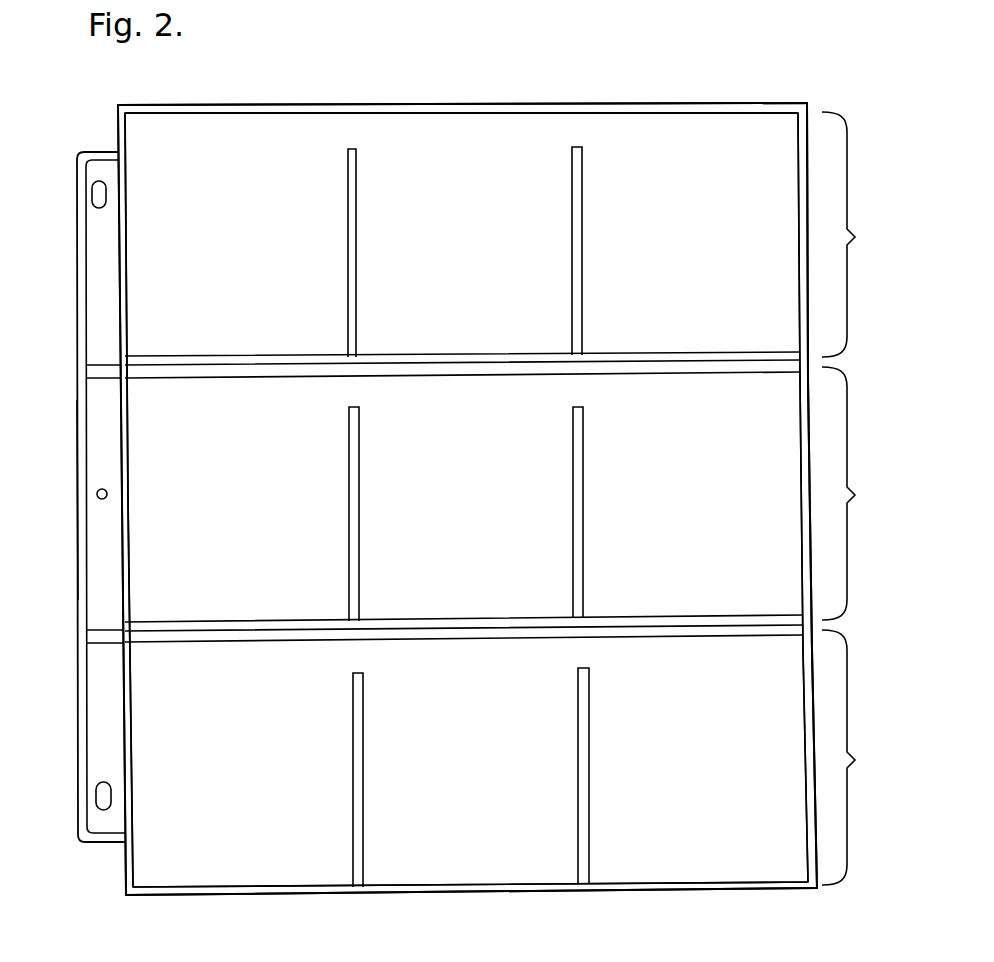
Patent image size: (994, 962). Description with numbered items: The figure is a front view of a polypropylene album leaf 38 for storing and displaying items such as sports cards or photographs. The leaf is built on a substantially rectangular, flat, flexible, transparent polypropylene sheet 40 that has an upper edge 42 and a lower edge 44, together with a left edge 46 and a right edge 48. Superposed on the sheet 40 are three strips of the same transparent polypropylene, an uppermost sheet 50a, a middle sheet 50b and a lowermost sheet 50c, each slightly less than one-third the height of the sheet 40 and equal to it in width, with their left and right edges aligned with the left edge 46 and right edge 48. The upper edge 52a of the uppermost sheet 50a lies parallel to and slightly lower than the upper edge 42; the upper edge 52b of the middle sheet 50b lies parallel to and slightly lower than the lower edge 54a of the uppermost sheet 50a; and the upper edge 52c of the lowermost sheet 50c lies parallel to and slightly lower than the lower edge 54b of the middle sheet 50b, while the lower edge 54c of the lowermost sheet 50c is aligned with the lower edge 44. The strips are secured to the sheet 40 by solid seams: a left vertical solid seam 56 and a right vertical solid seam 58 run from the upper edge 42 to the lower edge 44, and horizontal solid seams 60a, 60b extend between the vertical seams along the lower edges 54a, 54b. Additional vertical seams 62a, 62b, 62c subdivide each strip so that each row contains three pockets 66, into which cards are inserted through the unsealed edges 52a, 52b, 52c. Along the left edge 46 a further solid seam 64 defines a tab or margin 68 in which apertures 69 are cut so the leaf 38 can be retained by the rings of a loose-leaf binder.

The album leaf 38 is at (443, 102).
The polypropylene sheet 40 is at (634, 105).
The upper edge 42 is at (700, 105).
The lower edge 44 is at (648, 893).
The left edge 46 is at (76, 272).
The right edge 48 is at (813, 103).
The uppermost sheet 50a is at (859, 234).
The middle sheet 50b is at (859, 493).
The lowermost sheet 50c is at (858, 757).
The upper edge of uppermost sheet 52a is at (247, 119).
The upper edge of middle sheet 52b is at (207, 380).
The upper edge of lowermost sheet 52c is at (195, 645).
The lower edge of uppermost sheet 54a is at (100, 370).
The lower edge of middle sheet 54b is at (100, 640).
The lower edge of lowermost sheet 54c is at (232, 895).
The left vertical solid seam 56 is at (124, 250).
The right vertical solid seam 58 is at (797, 240).
The horizontal solid seam 60a is at (262, 356).
The horizontal solid seam 60b is at (245, 622).
The vertical seams of first row 62a is at (357, 175).
The vertical seams of second row 62b is at (360, 482).
The vertical seams of third row 62c is at (365, 713).
The solid seam 64 is at (78, 418).
The pockets 66 is at (699, 790).
The tab or margin 68 is at (98, 575).
The apertures 69 is at (96, 192).